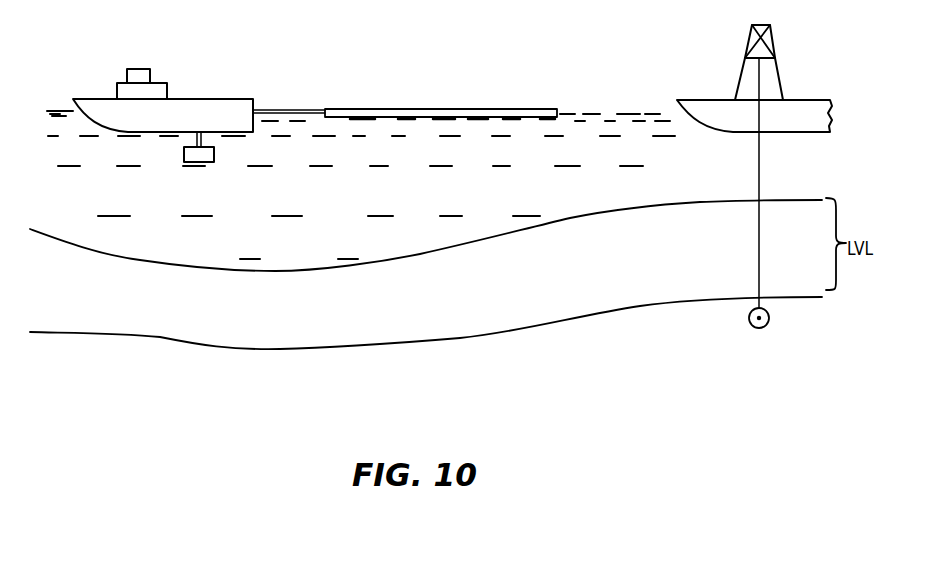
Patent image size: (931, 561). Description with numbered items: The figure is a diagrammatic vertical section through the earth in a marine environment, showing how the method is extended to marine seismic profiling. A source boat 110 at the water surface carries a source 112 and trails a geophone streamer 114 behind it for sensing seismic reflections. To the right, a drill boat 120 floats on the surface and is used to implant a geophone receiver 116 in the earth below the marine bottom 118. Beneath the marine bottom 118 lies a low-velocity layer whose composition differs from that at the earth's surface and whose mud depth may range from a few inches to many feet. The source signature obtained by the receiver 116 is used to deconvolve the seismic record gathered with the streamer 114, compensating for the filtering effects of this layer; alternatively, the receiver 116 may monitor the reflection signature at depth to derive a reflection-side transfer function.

The source boat 110 is at (216, 99).
The source 112 is at (211, 162).
The geophone streamer 114 is at (422, 109).
The geophone receiver 116 is at (747, 320).
The marine bottom 118 is at (278, 271).
The drill boat 120 is at (702, 99).